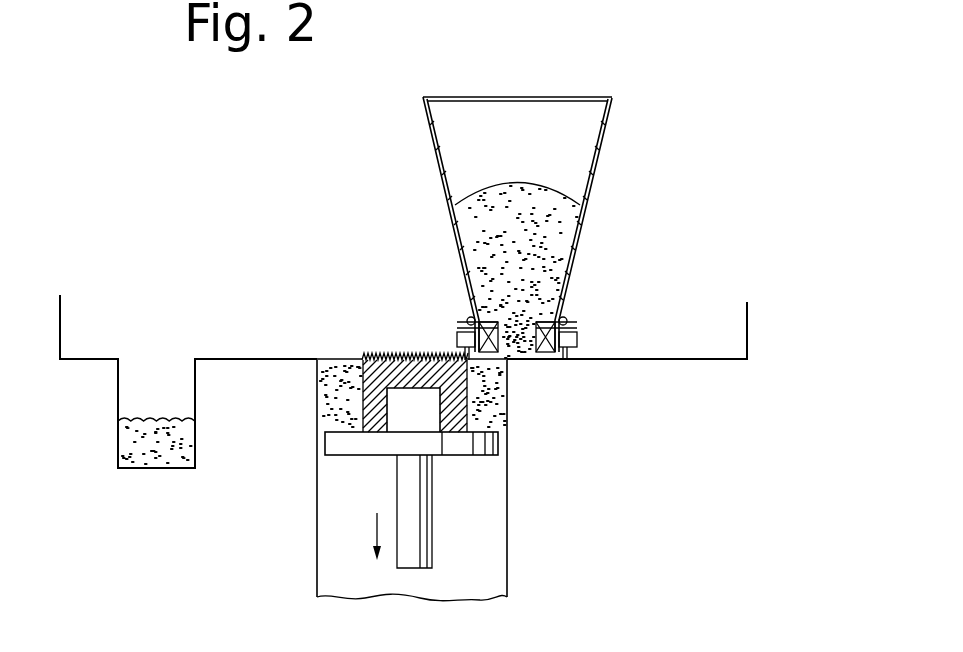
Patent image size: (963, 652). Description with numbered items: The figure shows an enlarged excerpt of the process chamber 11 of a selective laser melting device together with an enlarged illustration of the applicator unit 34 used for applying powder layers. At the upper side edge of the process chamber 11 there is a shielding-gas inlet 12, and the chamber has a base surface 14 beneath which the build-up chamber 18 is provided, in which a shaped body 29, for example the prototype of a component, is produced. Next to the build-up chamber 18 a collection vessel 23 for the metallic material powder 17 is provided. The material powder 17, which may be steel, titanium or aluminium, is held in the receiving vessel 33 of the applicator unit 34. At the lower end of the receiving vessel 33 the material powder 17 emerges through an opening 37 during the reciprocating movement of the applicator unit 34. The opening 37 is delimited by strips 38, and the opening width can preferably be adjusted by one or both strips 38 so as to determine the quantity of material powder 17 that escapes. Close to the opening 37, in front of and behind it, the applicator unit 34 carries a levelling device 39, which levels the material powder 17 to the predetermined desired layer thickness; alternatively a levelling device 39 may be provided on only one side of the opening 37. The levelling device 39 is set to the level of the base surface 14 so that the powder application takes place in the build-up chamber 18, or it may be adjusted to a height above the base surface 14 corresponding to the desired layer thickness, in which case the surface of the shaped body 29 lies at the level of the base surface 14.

The process chamber 11 is at (216, 238).
The shielding-gas inlet 12 is at (467, 450).
The base surface 14 is at (228, 360).
The material powder 17 is at (118, 452).
The build-up chamber 18 is at (530, 535).
The collection vessel 23 is at (130, 397).
The shaped body 29 is at (457, 392).
The receiving vessel 33 is at (608, 118).
The applicator unit 34 is at (628, 175).
The opening 37 is at (517, 333).
The strips 38 is at (505, 361).
The levelling device 39 is at (457, 336).